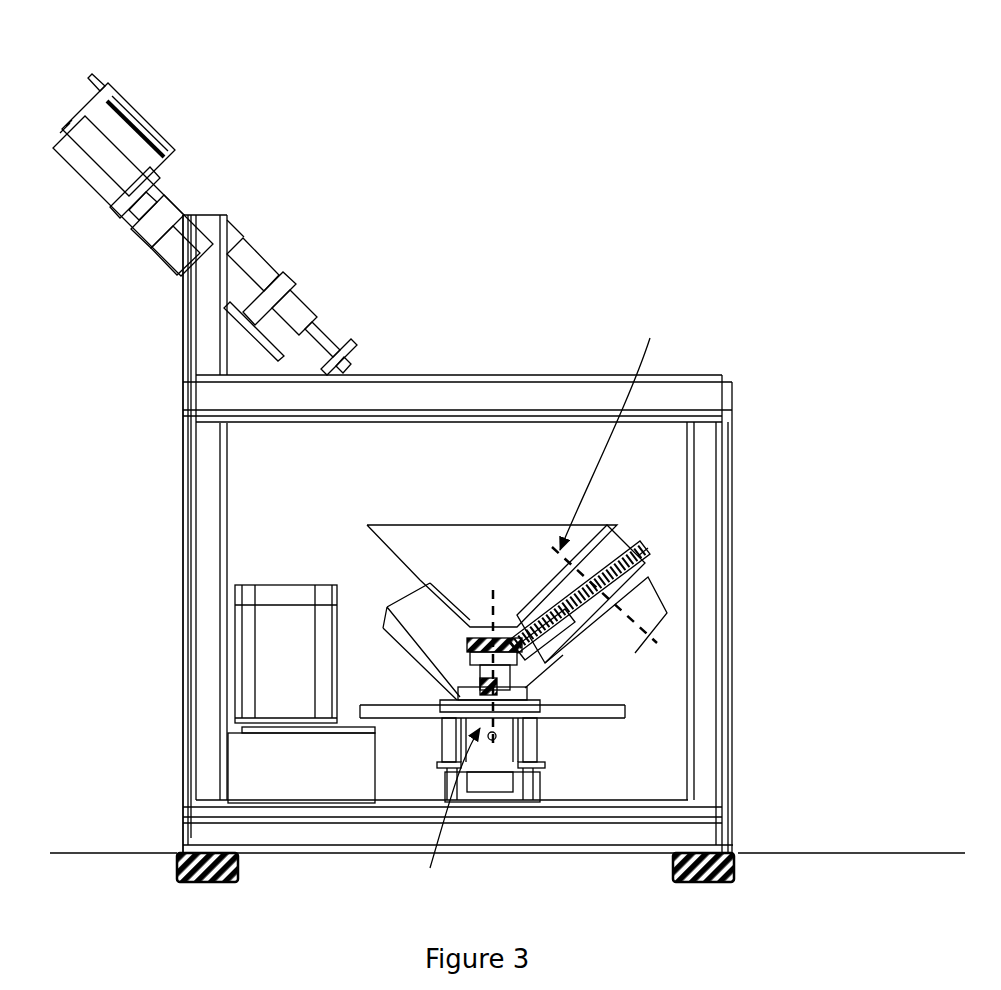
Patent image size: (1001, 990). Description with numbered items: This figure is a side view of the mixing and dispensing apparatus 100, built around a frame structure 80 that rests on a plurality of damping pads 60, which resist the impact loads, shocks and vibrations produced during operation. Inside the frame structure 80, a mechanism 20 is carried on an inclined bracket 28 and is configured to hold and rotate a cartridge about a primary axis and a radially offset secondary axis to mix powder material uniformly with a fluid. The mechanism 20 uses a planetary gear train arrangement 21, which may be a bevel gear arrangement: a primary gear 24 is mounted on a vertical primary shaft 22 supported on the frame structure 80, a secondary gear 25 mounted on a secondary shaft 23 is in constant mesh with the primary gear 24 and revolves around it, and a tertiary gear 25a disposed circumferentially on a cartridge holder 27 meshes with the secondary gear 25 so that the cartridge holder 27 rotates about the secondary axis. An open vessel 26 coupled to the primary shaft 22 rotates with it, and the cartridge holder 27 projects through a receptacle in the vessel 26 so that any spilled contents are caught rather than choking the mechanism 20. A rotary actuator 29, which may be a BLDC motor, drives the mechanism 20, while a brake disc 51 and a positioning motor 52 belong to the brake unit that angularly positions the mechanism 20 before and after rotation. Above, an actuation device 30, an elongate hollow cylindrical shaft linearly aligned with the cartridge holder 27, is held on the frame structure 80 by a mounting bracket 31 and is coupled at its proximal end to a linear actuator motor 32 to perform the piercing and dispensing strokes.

The mixing and dispensing apparatus 100 is at (512, 125).
The mechanism 20 is at (625, 522).
The planetary gear train arrangement 21 is at (505, 617).
The primary shaft 22 is at (518, 775).
The secondary shaft 23 is at (567, 663).
The primary gear 24 is at (520, 652).
The secondary gear 25 is at (557, 612).
The tertiary gear 25a is at (645, 547).
The open vessel 26 is at (488, 520).
The cartridge holder 27 is at (610, 545).
The inclined bracket 28 is at (400, 585).
The rotary actuator 29 is at (272, 652).
The actuation device 30 is at (262, 262).
The mounting bracket 31 is at (148, 247).
The linear actuator motor 32 is at (98, 95).
The brake disc 51 is at (625, 710).
The positioning motor 52 is at (452, 742).
The damping pads 60 is at (178, 868).
The frame structure 80 is at (178, 470).